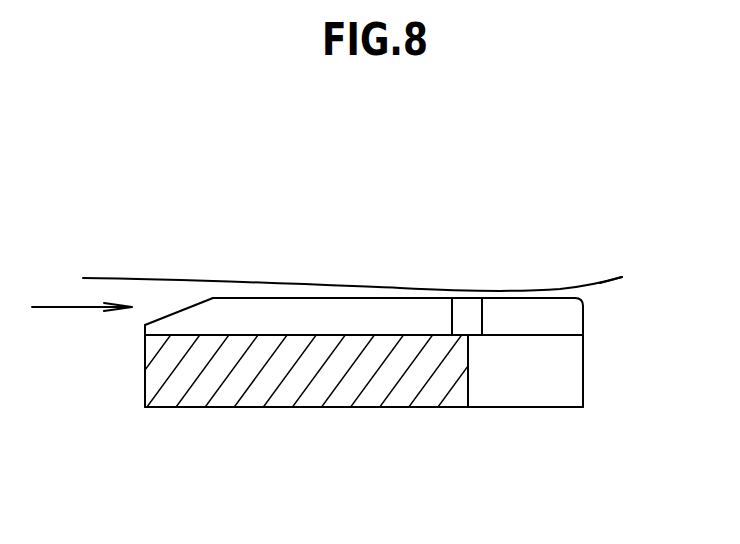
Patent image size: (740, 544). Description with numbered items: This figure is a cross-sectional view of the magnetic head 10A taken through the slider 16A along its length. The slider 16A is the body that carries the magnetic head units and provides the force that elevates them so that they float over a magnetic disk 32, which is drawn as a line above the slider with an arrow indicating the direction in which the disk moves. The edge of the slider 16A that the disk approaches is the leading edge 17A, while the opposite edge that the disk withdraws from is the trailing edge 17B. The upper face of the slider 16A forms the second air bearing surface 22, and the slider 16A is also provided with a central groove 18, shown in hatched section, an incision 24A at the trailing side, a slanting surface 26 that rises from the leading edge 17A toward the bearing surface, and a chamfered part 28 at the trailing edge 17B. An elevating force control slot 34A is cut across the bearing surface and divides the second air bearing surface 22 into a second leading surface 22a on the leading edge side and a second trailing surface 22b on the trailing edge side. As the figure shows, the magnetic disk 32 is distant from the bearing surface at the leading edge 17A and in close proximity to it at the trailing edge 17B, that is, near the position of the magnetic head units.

The magnetic head 10A is at (497, 162).
The slider 16A is at (513, 416).
The leading edge 17A is at (145, 325).
The trailing edge 17B is at (577, 295).
The central groove 18 is at (335, 335).
The second air bearing surface 22 is at (365, 219).
The second leading surface 22a is at (268, 298).
The second trailing surface 22b is at (542, 291).
The incision 24A is at (570, 383).
The slanting surface 26 is at (190, 306).
The chamfered part 28 is at (580, 296).
The magnetic disk 32 is at (612, 277).
The elevating force control slot 34A is at (462, 316).